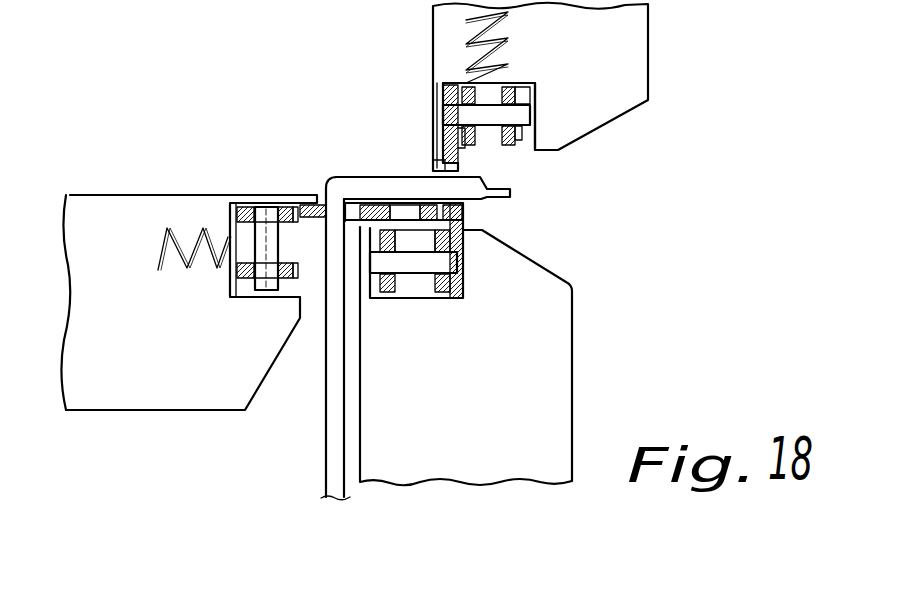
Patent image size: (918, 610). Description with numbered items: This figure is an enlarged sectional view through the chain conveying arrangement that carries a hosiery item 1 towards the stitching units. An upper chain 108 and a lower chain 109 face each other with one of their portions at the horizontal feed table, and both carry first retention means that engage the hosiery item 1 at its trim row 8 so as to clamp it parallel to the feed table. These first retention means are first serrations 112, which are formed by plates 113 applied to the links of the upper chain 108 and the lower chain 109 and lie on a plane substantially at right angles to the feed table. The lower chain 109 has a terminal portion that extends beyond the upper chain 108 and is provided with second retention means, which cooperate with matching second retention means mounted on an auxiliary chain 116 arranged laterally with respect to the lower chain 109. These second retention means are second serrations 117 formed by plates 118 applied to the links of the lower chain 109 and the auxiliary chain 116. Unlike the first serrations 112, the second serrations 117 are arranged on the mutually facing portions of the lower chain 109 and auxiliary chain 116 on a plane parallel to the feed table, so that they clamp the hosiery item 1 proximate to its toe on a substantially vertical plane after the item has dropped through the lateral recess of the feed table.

The hosiery item 1 is at (330, 413).
The trim row 8 is at (510, 184).
The upper chain 108 is at (518, 114).
The lower chain 109 is at (422, 267).
The first serrations 112 is at (458, 208).
The plates 113 is at (443, 88).
The auxiliary chain 116 is at (263, 243).
The second serrations 117 is at (333, 177).
The plates 118 is at (380, 207).